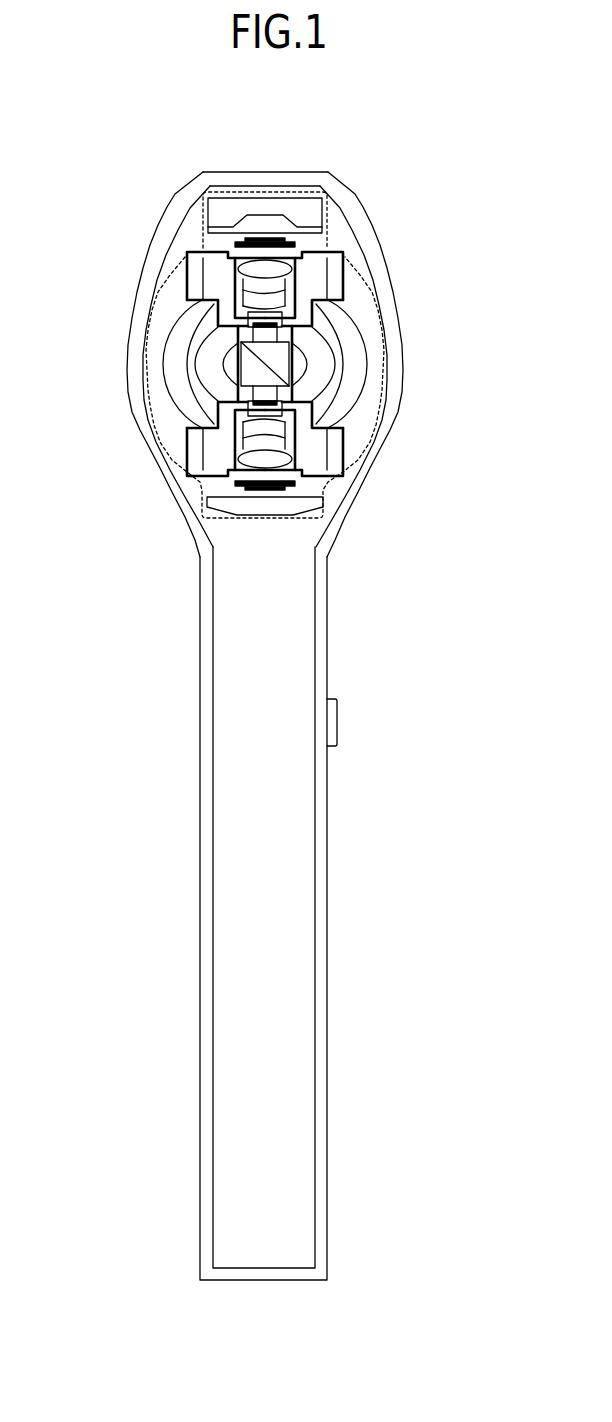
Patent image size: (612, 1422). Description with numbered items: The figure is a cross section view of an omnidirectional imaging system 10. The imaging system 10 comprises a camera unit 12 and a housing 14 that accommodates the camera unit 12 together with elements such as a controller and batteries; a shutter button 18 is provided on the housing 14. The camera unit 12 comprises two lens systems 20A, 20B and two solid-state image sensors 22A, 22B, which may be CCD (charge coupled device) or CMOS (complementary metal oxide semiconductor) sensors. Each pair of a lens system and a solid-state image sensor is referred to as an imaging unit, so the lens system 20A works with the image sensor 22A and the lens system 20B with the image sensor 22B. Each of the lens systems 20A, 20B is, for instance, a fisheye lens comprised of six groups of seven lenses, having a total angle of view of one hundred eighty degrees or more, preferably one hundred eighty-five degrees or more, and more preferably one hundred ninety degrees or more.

The omnidirectional imaging system 10 is at (56, 200).
The camera unit 12 is at (356, 460).
The housing 14 is at (200, 982).
The shutter button 18 is at (339, 723).
The lens system 20A is at (133, 416).
The lens system 20B is at (384, 426).
The solid-state image sensor 22A is at (203, 499).
The solid-state image sensor 22B is at (210, 229).